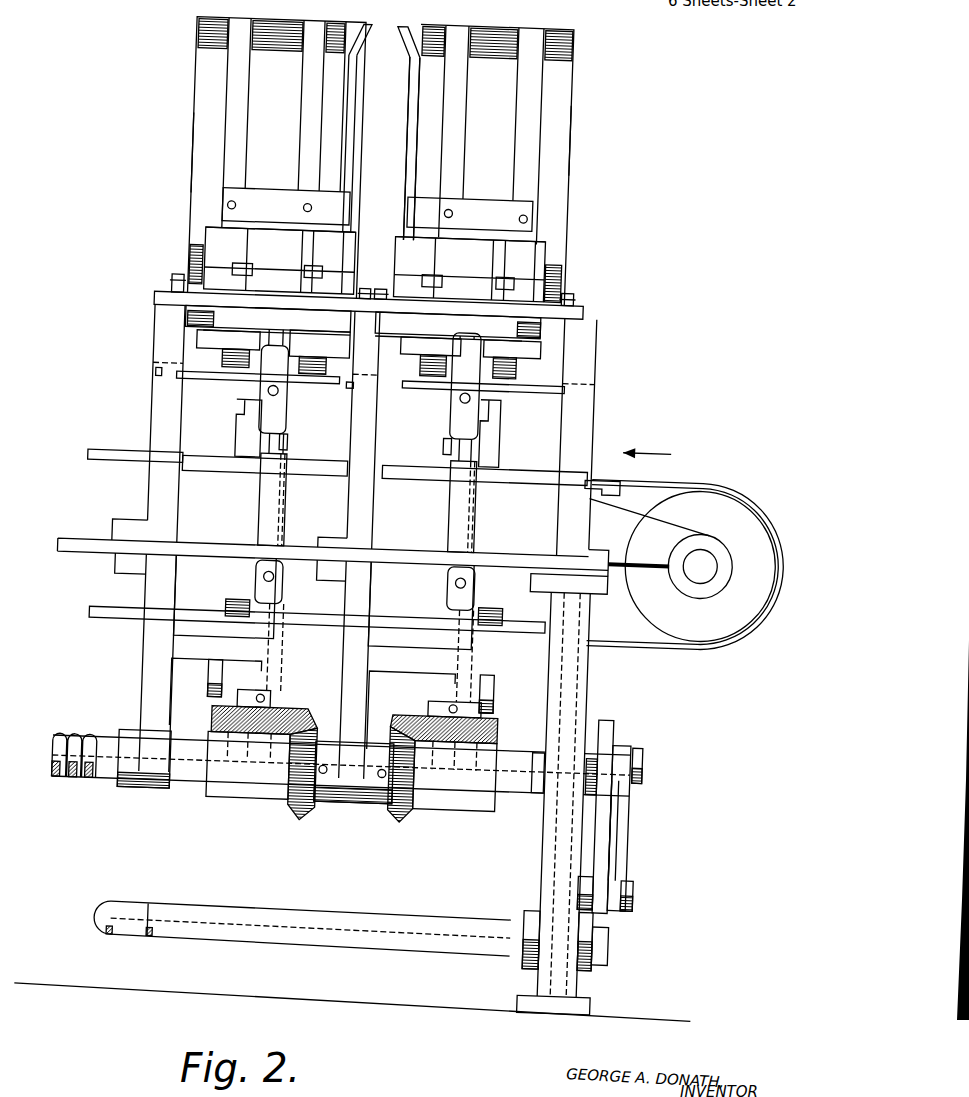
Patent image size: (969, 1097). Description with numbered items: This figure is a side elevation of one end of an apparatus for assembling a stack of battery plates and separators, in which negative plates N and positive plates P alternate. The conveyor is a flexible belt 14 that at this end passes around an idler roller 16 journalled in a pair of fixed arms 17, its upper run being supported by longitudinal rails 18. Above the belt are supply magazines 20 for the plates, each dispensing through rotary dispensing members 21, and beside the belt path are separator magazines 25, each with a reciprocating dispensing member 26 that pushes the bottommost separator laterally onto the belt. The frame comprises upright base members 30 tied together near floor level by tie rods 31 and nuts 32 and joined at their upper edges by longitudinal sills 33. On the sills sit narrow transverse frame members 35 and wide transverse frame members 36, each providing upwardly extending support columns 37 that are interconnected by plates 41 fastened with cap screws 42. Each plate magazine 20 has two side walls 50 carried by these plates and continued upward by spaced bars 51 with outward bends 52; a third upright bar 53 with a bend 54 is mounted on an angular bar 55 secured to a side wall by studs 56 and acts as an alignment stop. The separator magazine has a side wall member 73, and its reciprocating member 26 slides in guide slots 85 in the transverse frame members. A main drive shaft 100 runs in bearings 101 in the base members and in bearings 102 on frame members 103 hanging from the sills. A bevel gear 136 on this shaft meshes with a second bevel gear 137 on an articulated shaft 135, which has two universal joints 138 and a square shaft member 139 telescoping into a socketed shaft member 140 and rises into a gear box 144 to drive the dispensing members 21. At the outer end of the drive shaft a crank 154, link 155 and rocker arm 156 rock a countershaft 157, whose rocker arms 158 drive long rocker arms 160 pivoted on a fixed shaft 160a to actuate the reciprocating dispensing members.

The flexible belt 14 is at (680, 474).
The idler roller 16 is at (751, 514).
The fixed arms 17 is at (670, 518).
The longitudinal rails 18 is at (544, 488).
The supply magazine 20 is at (205, 128).
The rotary dispensing member 21 is at (204, 354).
The separator magazine 25 is at (172, 180).
The reciprocating dispensing member 26 is at (204, 389).
The upright base member 30 is at (593, 683).
The tie rod 31 is at (343, 912).
The nut 32 is at (598, 960).
The longitudinal sill 33 is at (78, 565).
The narrow transverse frame member 35 is at (127, 529).
The wide transverse frame member 36 is at (373, 542).
The support column 37 is at (147, 438).
The plate 41 is at (151, 301).
The cap screw 42 is at (167, 282).
The side wall 50 is at (205, 230).
The spaced bar 51 is at (286, 106).
The outward bend 52 is at (290, 48).
The upright bar 53 is at (393, 124).
The bend 54 is at (383, 30).
The angular bar 55 is at (396, 209).
The stud 56 is at (225, 211).
The side wall member 73 is at (180, 70).
The guide slot 85 is at (172, 390).
The main drive shaft 100 is at (116, 790).
The bearing 101 is at (548, 800).
The bearing 102 is at (159, 797).
The frame member 103 is at (170, 587).
The articulated shaft 135 is at (284, 519).
The bevel gear 136 is at (305, 818).
The second bevel gear 137 is at (301, 714).
The universal joint 138 is at (283, 398).
The square shaft member 139 is at (284, 453).
The shaft member 140 is at (284, 496).
The gear box 144 is at (375, 264).
The crank 154 is at (651, 750).
The link 155 is at (622, 816).
The rocker arm 156 is at (610, 851).
The countershaft 157 is at (85, 746).
The rocker arm 158 is at (227, 686).
The rocker arm 160 is at (258, 500).
The fixed shaft 160a is at (68, 789).
The positive plate P is at (182, 251).
The negative plate N is at (547, 259).